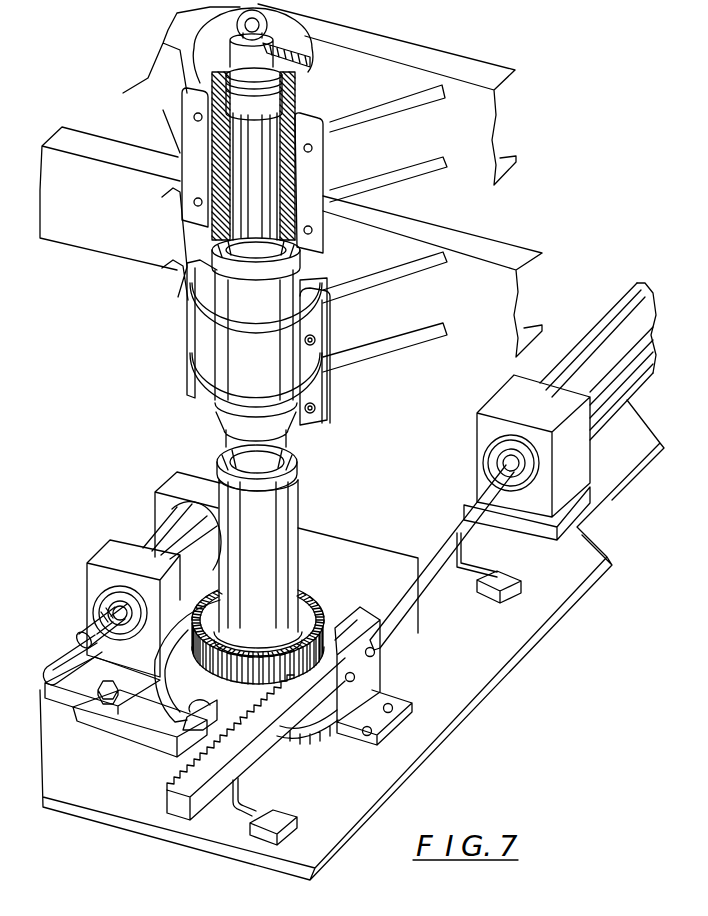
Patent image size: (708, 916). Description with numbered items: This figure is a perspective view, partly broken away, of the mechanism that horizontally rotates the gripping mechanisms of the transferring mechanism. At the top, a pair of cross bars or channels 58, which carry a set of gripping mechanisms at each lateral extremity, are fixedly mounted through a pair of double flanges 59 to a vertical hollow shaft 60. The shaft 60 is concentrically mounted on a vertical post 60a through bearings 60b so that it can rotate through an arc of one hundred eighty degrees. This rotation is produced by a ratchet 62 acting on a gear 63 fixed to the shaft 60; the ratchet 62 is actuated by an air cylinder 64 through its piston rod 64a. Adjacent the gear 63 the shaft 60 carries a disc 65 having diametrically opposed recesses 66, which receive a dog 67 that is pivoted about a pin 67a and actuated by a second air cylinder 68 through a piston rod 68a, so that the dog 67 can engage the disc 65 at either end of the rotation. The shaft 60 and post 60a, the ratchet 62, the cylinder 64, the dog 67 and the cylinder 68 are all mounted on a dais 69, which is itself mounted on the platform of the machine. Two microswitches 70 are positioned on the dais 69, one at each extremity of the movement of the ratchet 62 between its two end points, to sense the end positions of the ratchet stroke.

The cross bars or channels 58 is at (511, 234).
The double flanges 59 is at (332, 248).
The vertical hollow shaft 60 is at (300, 512).
The vertical post 60a is at (294, 460).
The bearings 60b is at (277, 103).
The ratchet 62 is at (248, 753).
The gear 63 is at (337, 610).
The air cylinder 64 is at (585, 347).
The piston rod 64a is at (395, 612).
The disc 65 is at (289, 747).
The recesses 66 is at (310, 597).
The dog 67 is at (145, 737).
The pin 67a is at (87, 707).
The air cylinder 68 is at (157, 537).
The piston rod 68a is at (88, 623).
The dais 69 is at (507, 653).
The microswitches 70 is at (521, 593).